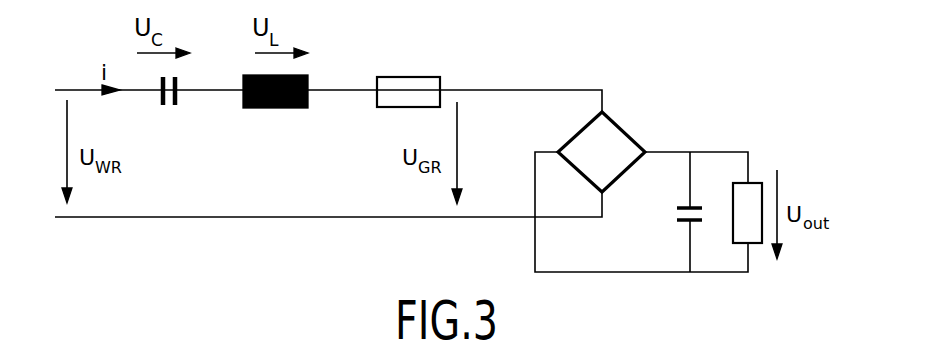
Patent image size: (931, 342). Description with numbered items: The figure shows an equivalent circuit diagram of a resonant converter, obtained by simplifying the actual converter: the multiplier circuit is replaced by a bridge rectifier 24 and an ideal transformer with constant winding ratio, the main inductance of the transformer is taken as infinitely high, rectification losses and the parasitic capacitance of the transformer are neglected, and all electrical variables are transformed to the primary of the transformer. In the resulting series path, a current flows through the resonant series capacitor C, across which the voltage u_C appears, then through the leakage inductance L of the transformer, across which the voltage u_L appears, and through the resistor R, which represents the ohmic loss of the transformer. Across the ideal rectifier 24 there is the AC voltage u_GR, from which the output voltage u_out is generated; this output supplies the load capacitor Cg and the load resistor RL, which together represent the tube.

The bridge rectifier 24 is at (622, 128).
The series capacitor C is at (159, 103).
The leakage inductance L is at (270, 104).
The resistor R is at (407, 76).
The load capacitor Cg is at (672, 212).
The load resistor RL is at (735, 228).